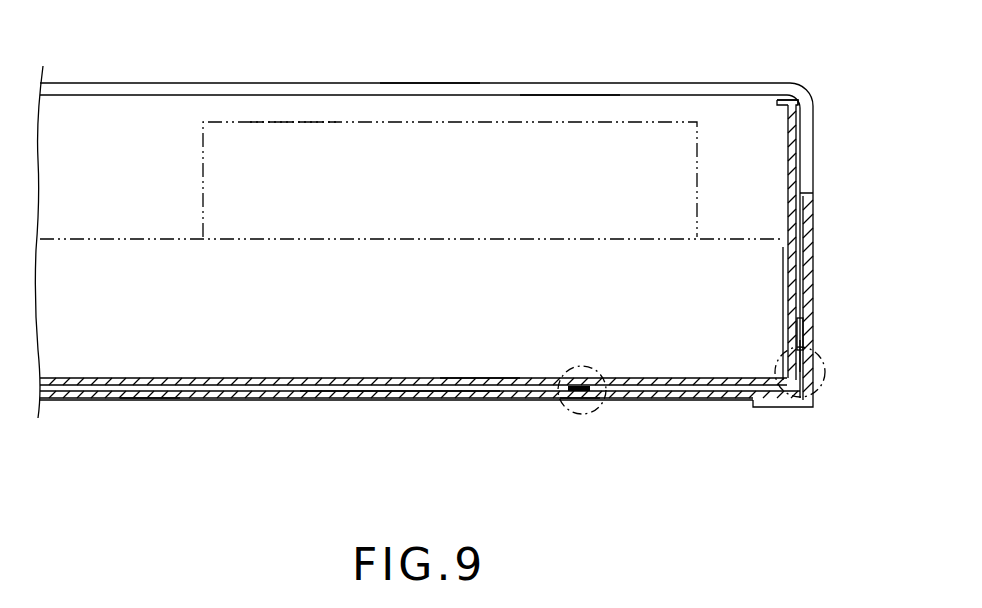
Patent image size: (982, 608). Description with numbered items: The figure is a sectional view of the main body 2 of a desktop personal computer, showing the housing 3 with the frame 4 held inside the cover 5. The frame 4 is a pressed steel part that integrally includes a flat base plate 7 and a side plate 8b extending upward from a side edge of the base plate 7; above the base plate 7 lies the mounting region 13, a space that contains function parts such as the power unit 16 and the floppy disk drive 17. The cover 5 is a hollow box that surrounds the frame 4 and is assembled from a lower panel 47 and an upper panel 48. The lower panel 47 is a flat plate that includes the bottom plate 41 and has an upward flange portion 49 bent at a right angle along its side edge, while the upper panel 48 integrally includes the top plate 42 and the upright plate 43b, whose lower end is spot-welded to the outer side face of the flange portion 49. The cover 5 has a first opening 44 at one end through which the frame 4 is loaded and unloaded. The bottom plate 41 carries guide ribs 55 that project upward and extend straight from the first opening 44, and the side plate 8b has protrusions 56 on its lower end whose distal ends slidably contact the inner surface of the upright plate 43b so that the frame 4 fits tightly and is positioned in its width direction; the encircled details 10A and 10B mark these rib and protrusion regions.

The main body 2 is at (655, 78).
The housing 3 is at (420, 455).
The frame 4 is at (350, 398).
The cover 5 is at (451, 431).
The base plate 7 is at (243, 378).
The side plate 8b is at (795, 173).
The joint portion 10A is at (585, 366).
The joint portion 10B is at (790, 375).
The mounting region 13 is at (450, 179).
The power unit 16 is at (85, 240).
The floppy disk drive 17 is at (290, 137).
The bottom plate 41 is at (650, 400).
The top plate 42 is at (433, 83).
The upright plate 43b is at (805, 216).
The first opening 44 is at (565, 104).
The lower panel 47 is at (482, 378).
The upper panel 48 is at (805, 126).
The flange portion 49 is at (795, 322).
The guide rib 55 is at (150, 398).
The protrusion 56 is at (810, 358).